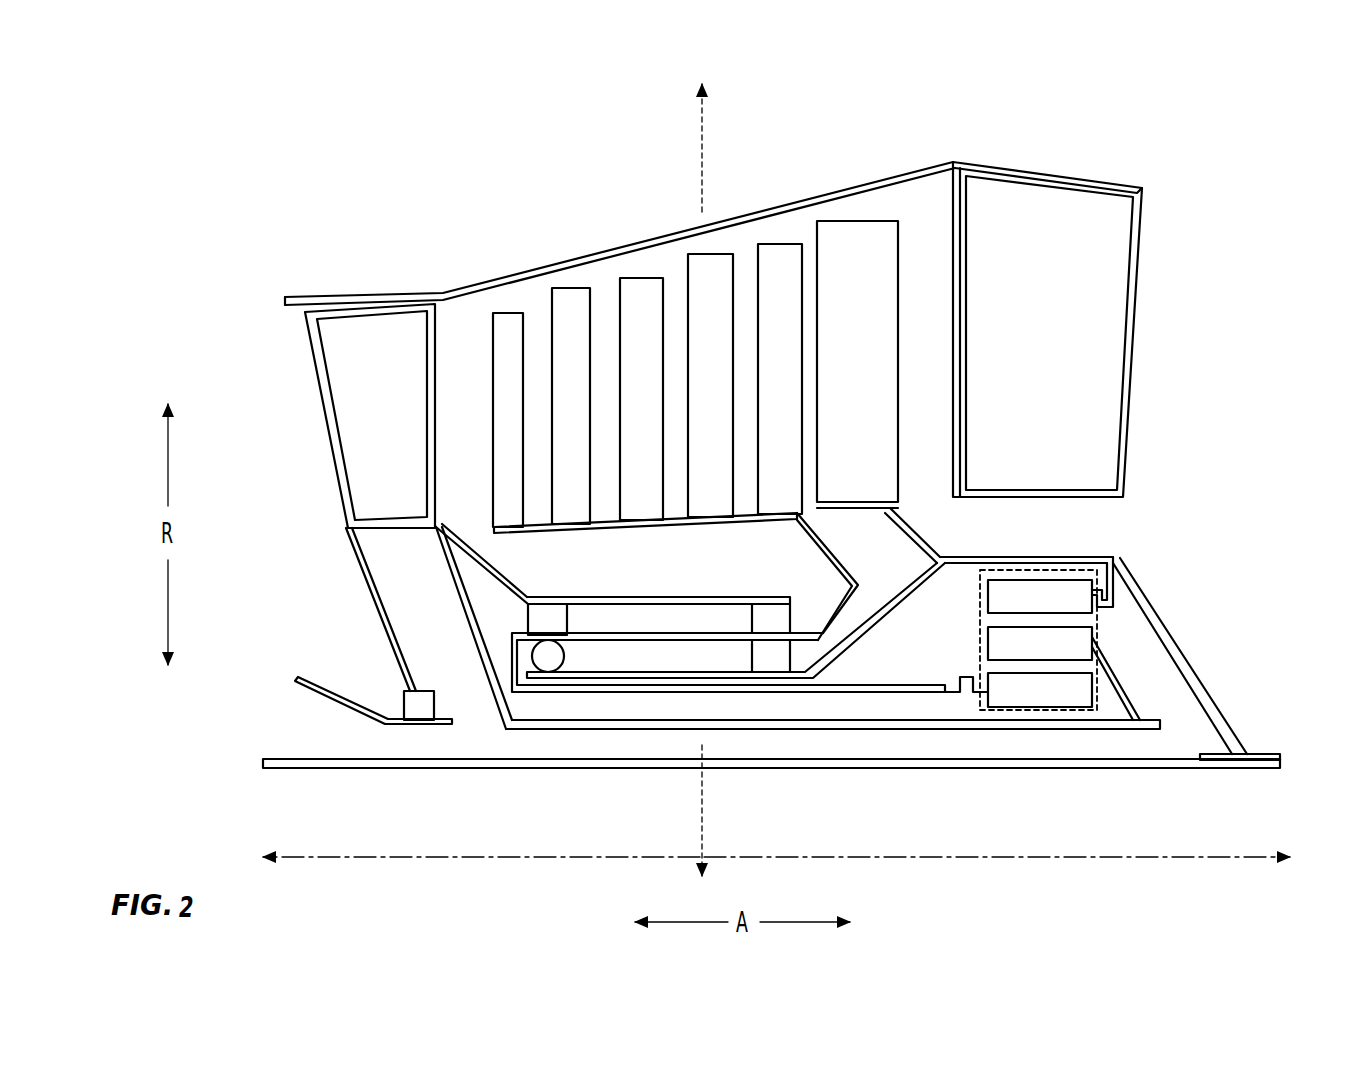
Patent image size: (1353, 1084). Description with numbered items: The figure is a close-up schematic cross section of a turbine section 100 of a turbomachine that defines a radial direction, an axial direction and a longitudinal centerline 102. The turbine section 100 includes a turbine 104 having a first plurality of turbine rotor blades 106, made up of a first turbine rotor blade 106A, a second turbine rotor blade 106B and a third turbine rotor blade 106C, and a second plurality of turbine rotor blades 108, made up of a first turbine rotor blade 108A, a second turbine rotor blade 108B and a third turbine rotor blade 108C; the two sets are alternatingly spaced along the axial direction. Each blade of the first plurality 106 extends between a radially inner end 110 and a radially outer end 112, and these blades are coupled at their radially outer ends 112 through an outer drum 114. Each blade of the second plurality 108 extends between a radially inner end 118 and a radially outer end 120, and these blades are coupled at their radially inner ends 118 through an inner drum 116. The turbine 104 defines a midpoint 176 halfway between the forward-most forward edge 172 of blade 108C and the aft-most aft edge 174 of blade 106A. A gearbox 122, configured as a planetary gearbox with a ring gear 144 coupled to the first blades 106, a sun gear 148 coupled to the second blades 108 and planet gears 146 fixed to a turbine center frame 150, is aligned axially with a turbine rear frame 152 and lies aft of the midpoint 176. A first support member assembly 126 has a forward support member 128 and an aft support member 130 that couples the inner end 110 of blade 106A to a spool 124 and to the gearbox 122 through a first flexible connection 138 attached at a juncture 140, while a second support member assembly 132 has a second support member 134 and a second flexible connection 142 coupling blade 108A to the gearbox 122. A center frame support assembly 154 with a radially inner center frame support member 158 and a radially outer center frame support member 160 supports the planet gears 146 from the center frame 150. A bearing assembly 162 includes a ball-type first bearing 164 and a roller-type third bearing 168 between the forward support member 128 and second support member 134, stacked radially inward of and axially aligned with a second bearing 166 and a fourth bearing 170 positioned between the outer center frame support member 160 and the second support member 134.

The turbine section 100 is at (452, 157).
The longitudinal centerline 102 is at (1182, 858).
The turbine 104 is at (790, 212).
The first plurality of turbine rotor blades 106 is at (761, 337).
The first turbine rotor blade 106A is at (880, 384).
The second turbine rotor blade 106B is at (720, 265).
The third turbine rotor blade 106C is at (563, 302).
The second plurality of turbine rotor blades 108 is at (655, 325).
The first turbine rotor blade 108A is at (783, 258).
The second turbine rotor blade 108B is at (648, 293).
The third turbine rotor blade 108C is at (503, 330).
The radially inner end 110 is at (909, 519).
The radially outer end 112 is at (898, 206).
The outer drum 114 is at (662, 236).
The inner drum 116 is at (608, 531).
The radially inner end 118 is at (521, 538).
The radially outer end 120 is at (507, 313).
The gearbox 122 is at (1062, 553).
The spool 124 is at (706, 769).
The first support member assembly 126 is at (1075, 555).
The forward support member 128 is at (845, 650).
The aft support member 130 is at (1165, 628).
The second support member assembly 132 is at (872, 581).
The second support member 134 is at (835, 607).
The first flexible connection 138 is at (1116, 587).
The juncture 140 is at (1196, 636).
The second flexible connection 142 is at (964, 677).
The ring gear 144 is at (1008, 593).
The planet gear 146 is at (1003, 648).
The sun gear 148 is at (1052, 701).
The turbine center frame 150 is at (395, 441).
The turbine rear frame 152 is at (1068, 387).
The center frame support assembly 154 is at (440, 612).
The radially inner center frame support member 158 is at (635, 731).
The radially outer center frame support member 160 is at (722, 597).
The bearing assembly 162 is at (504, 662).
The first bearing 164 is at (546, 667).
The second bearing 166 is at (550, 622).
The third bearing 168 is at (770, 662).
The fourth bearing 170 is at (763, 623).
The forward-most forward edge 172 is at (485, 370).
The aft-most aft edge 174 is at (911, 364).
The midpoint 176 is at (710, 120).